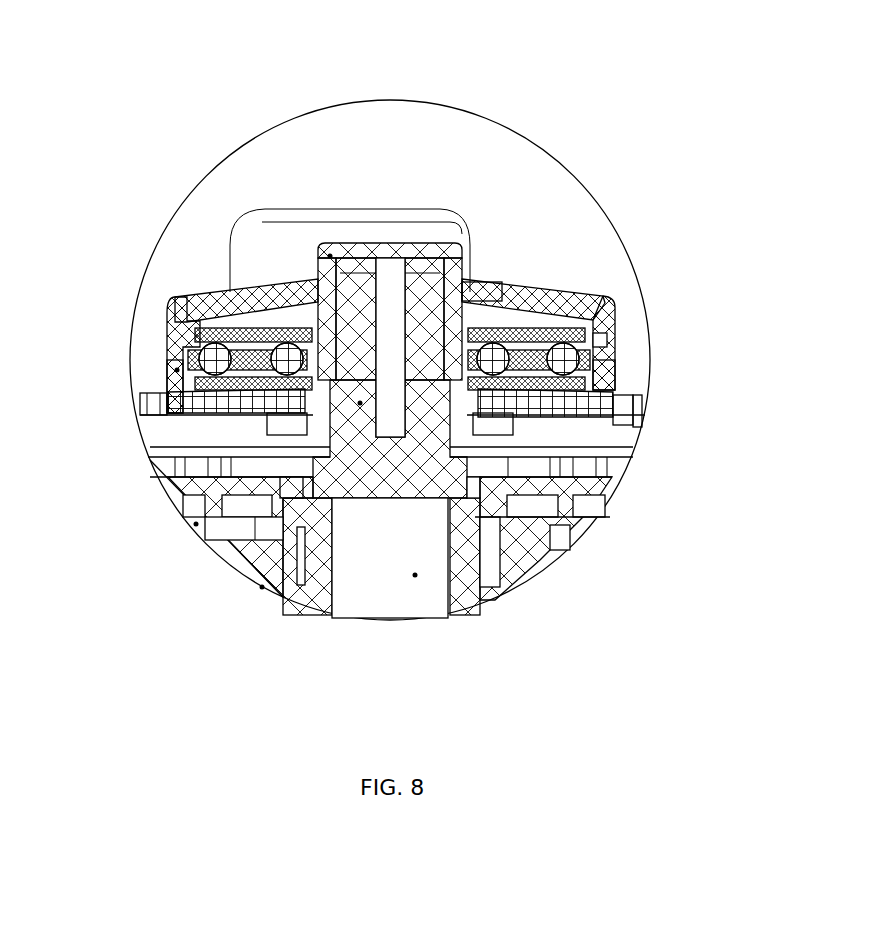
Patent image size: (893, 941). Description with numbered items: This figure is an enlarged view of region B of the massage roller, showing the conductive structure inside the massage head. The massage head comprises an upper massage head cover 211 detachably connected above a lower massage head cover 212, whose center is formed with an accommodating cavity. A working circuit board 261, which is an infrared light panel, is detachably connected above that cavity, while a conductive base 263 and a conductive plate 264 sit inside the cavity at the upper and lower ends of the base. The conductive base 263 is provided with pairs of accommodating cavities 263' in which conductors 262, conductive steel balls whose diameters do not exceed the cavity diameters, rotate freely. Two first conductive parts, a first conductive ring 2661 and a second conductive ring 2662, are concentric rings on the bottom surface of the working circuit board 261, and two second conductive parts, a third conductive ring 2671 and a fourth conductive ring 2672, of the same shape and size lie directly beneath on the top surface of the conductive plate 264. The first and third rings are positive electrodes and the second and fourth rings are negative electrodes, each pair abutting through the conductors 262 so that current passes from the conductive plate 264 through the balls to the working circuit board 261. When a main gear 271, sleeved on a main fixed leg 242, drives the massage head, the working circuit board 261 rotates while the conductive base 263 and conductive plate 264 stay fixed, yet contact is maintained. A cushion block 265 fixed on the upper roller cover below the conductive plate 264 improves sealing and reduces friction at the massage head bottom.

The upper massage head cover 211 is at (330, 256).
The lower massage head cover 212 is at (177, 370).
The main fixed leg 242 is at (415, 575).
The working circuit board 261 is at (167, 330).
The conductor 262 is at (615, 370).
The conductive base 263 is at (547, 211).
The accommodating cavity 263' is at (221, 247).
The conductive plate 264 is at (560, 417).
The cushion block 265 is at (192, 498).
The first conductive ring 2661 is at (487, 330).
The second conductive ring 2662 is at (616, 323).
The third conductive ring 2671 is at (196, 524).
The fourth conductive ring 2672 is at (507, 523).
The main gear 271 is at (360, 403).
The enlarged region B is at (262, 587).